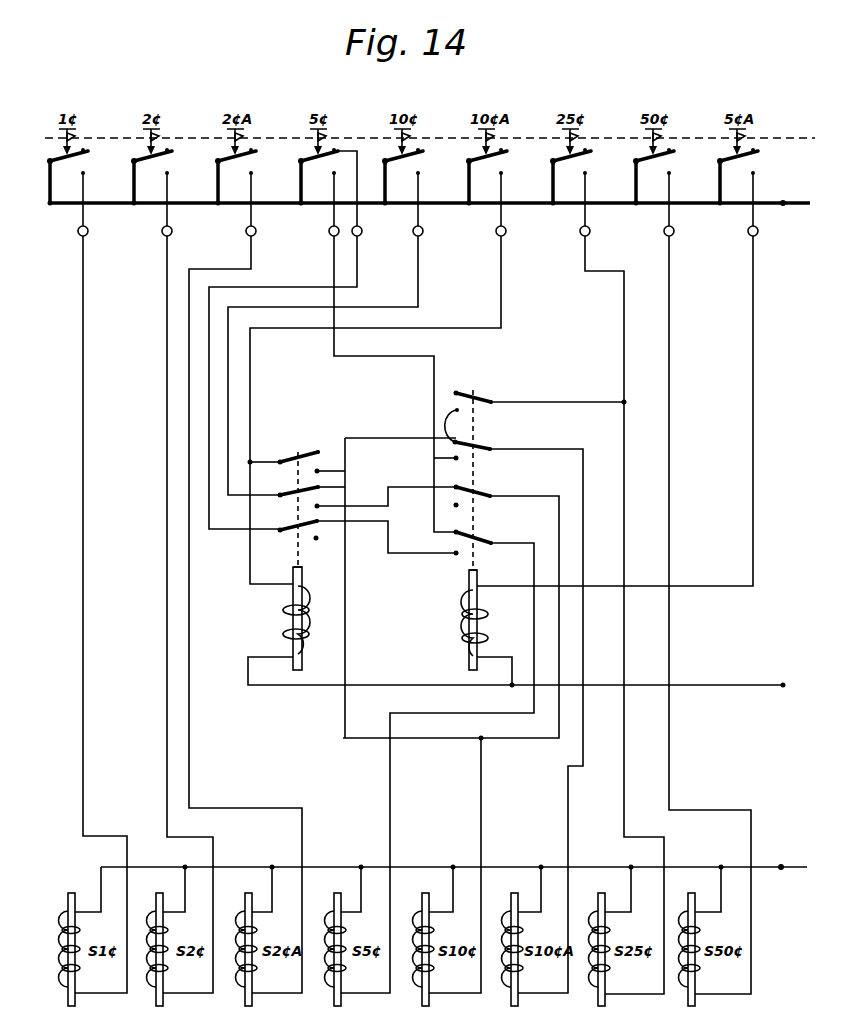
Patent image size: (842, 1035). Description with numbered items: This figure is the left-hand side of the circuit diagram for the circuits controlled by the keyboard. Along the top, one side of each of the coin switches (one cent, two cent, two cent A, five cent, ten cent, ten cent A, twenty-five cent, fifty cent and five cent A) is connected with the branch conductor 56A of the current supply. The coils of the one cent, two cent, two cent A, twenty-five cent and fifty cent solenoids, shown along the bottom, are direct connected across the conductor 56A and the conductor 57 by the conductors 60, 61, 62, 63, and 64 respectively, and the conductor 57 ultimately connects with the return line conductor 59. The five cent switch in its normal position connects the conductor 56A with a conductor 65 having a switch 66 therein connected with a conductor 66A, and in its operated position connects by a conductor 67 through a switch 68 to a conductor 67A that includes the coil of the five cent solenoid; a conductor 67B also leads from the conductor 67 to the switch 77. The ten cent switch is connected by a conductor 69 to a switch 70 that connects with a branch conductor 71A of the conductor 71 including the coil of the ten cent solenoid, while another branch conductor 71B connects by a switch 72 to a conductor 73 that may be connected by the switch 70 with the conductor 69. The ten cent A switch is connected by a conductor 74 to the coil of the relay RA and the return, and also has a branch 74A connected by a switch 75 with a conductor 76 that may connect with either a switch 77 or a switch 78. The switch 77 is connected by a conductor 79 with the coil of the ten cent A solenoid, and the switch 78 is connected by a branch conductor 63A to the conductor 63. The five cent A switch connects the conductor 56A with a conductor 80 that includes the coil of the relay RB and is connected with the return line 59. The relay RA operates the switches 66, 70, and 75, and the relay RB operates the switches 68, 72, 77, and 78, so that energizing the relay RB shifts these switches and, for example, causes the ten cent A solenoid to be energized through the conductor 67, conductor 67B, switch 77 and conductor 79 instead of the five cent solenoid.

The branch conductor 56A is at (595, 205).
The conductor 57 is at (535, 866).
The return line conductor 59 is at (733, 685).
The conductor 60 is at (83, 788).
The conductor 61 is at (167, 790).
The conductor 62 is at (189, 792).
The conductor 63 is at (622, 792).
The branch conductor 63A is at (592, 401).
The conductor 64 is at (667, 792).
The conductor 65 is at (358, 246).
The switch 66 is at (285, 530).
The conductor 66A is at (389, 527).
The conductor 67 is at (434, 384).
The conductor 67A is at (390, 788).
The conductor 67B is at (447, 458).
The switch 68 is at (480, 537).
The conductor 69 is at (228, 384).
The switch 70 is at (285, 495).
The conductor 71 is at (481, 786).
The branch conductor 71A is at (345, 608).
The branch conductor 71B is at (497, 739).
The switch 72 is at (478, 492).
The conductor 73 is at (382, 506).
The conductor 74 is at (478, 328).
The branch conductor 74A is at (268, 458).
The switch 75 is at (311, 452).
The conductor 76 is at (398, 438).
The switch 77 is at (480, 444).
The switch 78 is at (478, 393).
The conductor 79 is at (569, 791).
The conductor 80 is at (754, 442).
The relay RA is at (292, 622).
The relay RB is at (465, 628).